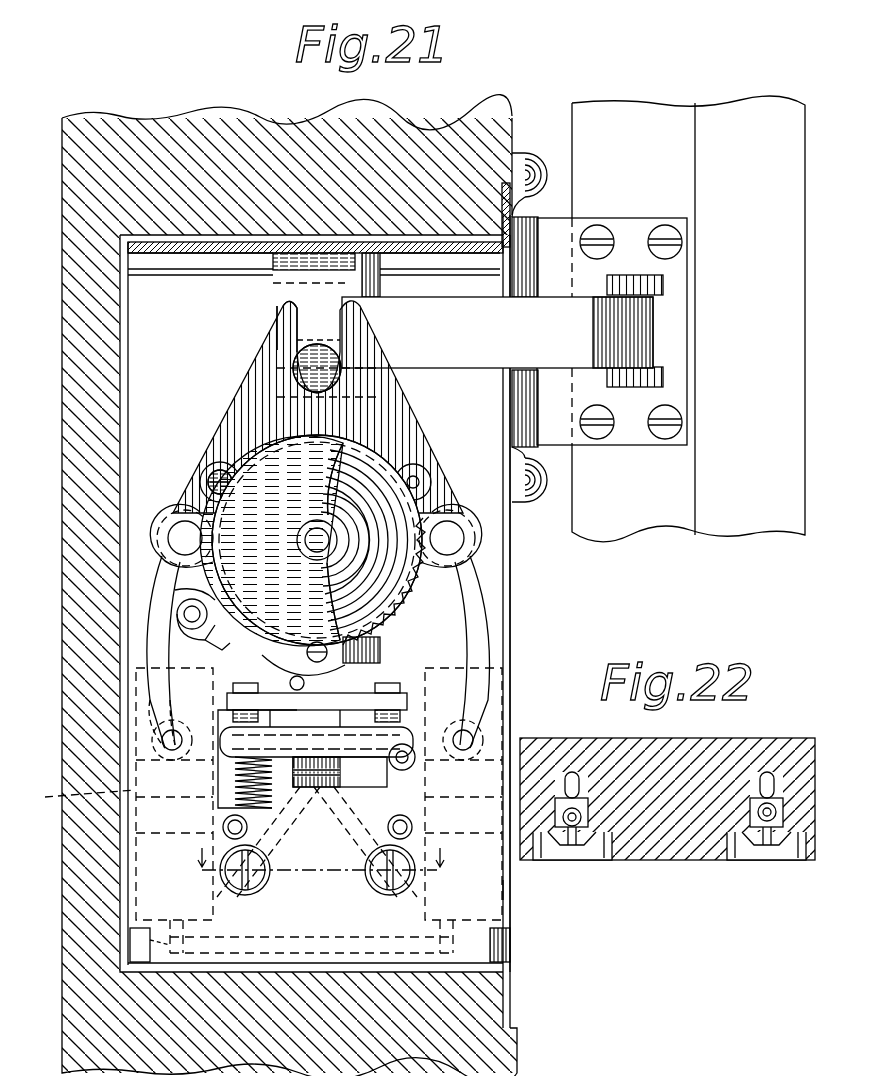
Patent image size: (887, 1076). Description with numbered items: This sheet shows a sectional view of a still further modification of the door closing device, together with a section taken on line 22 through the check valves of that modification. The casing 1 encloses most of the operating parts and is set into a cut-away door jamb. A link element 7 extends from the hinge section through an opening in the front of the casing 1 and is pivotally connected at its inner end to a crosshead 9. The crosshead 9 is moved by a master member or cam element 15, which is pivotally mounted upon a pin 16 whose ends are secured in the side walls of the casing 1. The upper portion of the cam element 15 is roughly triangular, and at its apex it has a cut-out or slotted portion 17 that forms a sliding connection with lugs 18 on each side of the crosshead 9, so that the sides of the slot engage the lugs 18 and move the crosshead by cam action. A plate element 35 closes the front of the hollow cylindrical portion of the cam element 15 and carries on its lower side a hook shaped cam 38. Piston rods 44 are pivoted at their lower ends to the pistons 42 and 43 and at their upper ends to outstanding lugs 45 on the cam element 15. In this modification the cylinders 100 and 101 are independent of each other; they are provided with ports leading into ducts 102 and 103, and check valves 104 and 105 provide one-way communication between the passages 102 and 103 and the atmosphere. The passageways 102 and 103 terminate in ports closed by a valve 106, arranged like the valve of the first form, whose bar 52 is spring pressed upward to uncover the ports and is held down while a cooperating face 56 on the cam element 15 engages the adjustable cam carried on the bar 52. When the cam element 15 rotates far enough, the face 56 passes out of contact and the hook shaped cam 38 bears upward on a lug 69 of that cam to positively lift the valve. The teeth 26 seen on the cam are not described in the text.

In FIG. 21, the casing 1 is at (508, 534).
In FIG. 21, the link element 7 is at (472, 360).
In FIG. 21, the crosshead 9 is at (318, 308).
In FIG. 21, the cam element 15 is at (243, 388).
In FIG. 21, the pin 16 is at (315, 540).
In FIG. 21, the slotted portion 17 is at (297, 328).
In FIG. 21, the lugs 18 is at (316, 348).
In FIG. 21, the section line 22 is at (319, 866).
In FIG. 21, the gear teeth 26 is at (392, 578).
In FIG. 21, the plate element 35 is at (311, 555).
In FIG. 21, the hook shaped cam 38 is at (205, 638).
In FIG. 21, the piston 42 is at (513, 738).
In FIG. 21, the piston 43 is at (79, 796).
In FIG. 21, the piston rods 44 is at (165, 568).
In FIG. 21, the outstanding lugs 45 is at (180, 535).
In FIG. 21, the bar 52 is at (365, 737).
In FIG. 21, the cooperating face 56 is at (380, 648).
In FIG. 21, the lug 69 is at (314, 689).
In FIG. 21, the cylinder 100 is at (140, 890).
In FIG. 21, the cylinder 101 is at (512, 885).
In FIG. 21, the duct 102 is at (282, 812).
In FIG. 21, the duct 103 is at (290, 852).
In FIG. 21, the check valve 104 is at (255, 893).
In FIG. 22, the check valve 104 is at (597, 868).
In FIG. 21, the check valve 105 is at (375, 903).
In FIG. 22, the check valve 105 is at (772, 862).
In FIG. 21, the valve 106 is at (340, 772).